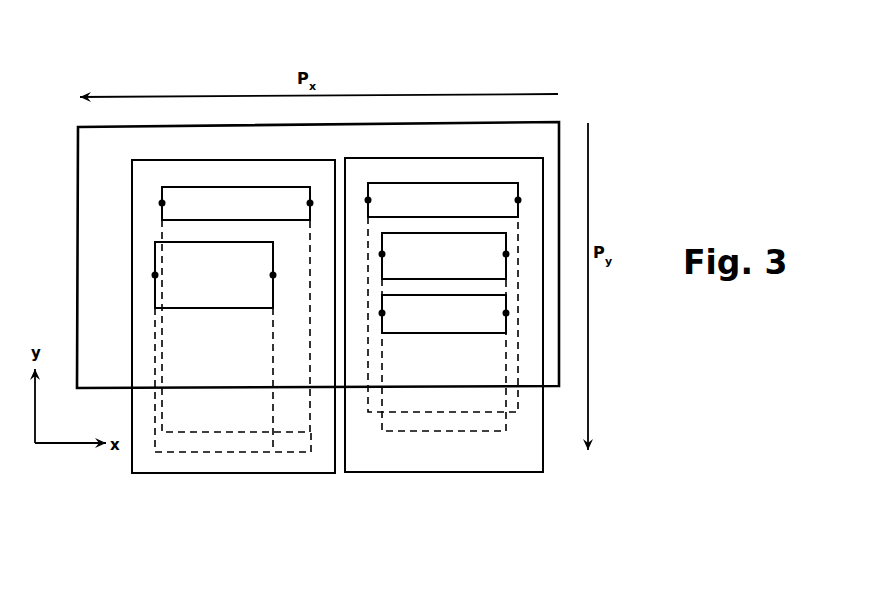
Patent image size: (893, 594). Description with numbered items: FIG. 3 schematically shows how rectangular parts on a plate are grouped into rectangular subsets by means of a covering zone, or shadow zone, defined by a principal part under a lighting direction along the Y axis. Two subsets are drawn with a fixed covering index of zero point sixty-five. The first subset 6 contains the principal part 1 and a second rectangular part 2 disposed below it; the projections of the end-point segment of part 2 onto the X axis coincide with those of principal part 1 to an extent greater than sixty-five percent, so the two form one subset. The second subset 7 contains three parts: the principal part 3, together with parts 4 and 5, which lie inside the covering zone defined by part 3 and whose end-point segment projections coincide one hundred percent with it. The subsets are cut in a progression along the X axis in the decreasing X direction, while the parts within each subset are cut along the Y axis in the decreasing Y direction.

The principal part 1 is at (236, 309).
The rectangular part 2 is at (223, 347).
The principal part 3 is at (444, 297).
The rectangular part 4 is at (446, 256).
The rectangular part 5 is at (446, 355).
The first subset 6 is at (233, 356).
The second subset 7 is at (444, 355).